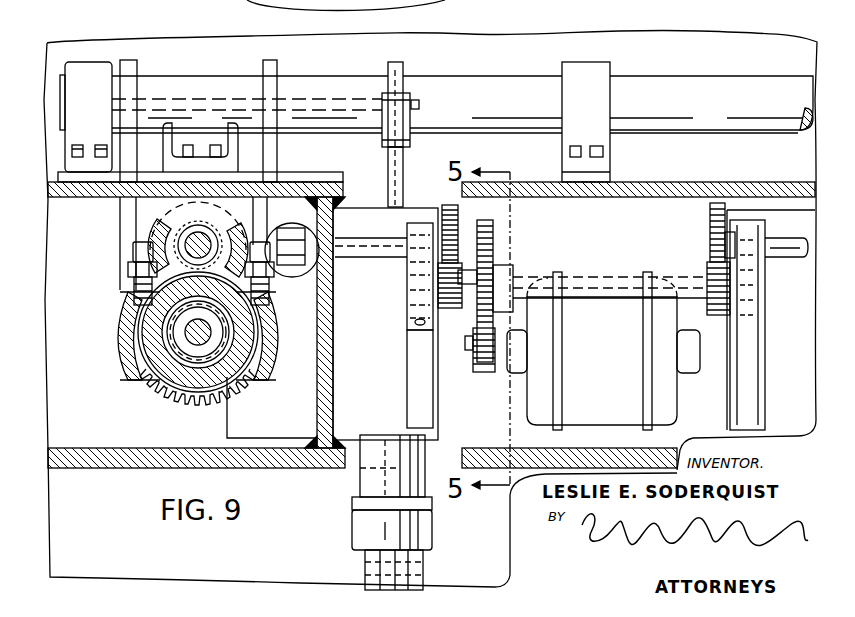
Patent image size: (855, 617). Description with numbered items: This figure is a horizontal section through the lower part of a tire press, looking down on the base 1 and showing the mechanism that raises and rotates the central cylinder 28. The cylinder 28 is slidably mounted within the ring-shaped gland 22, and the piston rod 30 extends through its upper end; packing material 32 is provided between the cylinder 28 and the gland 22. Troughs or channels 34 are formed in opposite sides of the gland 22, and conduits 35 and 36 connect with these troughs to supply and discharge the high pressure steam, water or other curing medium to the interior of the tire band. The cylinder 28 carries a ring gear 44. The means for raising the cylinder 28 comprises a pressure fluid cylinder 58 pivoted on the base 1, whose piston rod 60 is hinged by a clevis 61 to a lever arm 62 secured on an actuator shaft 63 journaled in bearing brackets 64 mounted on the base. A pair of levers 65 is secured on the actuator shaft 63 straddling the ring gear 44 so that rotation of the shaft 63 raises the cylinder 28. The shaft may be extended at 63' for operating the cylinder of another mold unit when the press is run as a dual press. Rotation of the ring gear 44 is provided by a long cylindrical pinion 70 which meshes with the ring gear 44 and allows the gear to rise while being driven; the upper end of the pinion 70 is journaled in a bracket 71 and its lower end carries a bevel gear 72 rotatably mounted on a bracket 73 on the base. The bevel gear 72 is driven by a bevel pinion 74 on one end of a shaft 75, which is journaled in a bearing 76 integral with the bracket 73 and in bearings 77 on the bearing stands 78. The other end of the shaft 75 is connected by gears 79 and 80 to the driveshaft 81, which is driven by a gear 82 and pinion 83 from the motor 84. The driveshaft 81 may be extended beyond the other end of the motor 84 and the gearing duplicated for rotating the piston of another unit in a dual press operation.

The base 1 is at (84, 462).
The ring-shaped gland 22 is at (162, 376).
The cylinder 28 is at (163, 328).
The piston rod 30 is at (238, 372).
The packing material 32 is at (141, 375).
The troughs or channels 34 is at (114, 356).
The conduit 35 is at (134, 250).
The conduit 36 is at (302, 262).
The ring gear 44 is at (194, 400).
The pressure fluid cylinder 58 is at (385, 438).
The piston rod 60 is at (390, 160).
The clevis 61 is at (413, 128).
The lever arm 62 is at (399, 72).
The actuator shaft 63 is at (337, 82).
The shaft extension 63' is at (711, 88).
The bearing brackets 64 is at (94, 75).
The levers 65 is at (275, 155).
The long cylindrical pinion 70 is at (186, 250).
The bracket 71 is at (197, 160).
The bevel gear 72 is at (158, 238).
The bracket 73 is at (322, 290).
The bevel pinion 74 is at (261, 208).
The shaft 75 is at (350, 246).
The bearing 76 is at (288, 282).
The bearings 77 is at (413, 261).
The bearing stands 78 is at (412, 362).
The gear 79 is at (452, 228).
The gear 80 is at (450, 309).
The driveshaft 81 is at (601, 287).
The gear 82 is at (494, 249).
The pinion 83 is at (492, 373).
The motor 84 is at (620, 352).